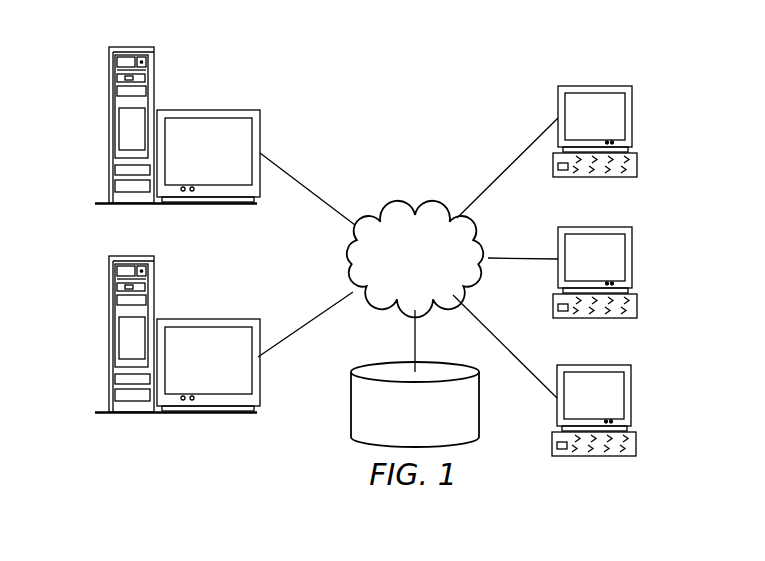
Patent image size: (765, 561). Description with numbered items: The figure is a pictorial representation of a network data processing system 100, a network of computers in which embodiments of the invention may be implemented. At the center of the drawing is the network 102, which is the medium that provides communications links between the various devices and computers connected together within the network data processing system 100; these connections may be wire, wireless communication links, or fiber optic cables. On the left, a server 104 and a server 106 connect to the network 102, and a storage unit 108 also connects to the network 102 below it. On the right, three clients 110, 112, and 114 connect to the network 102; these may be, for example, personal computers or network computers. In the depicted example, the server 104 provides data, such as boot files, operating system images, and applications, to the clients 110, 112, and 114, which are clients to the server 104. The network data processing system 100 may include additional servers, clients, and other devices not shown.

The network data processing system 100 is at (468, 95).
The network 102 is at (387, 212).
The server 104 is at (109, 130).
The server 106 is at (110, 335).
The storage unit 108 is at (351, 412).
The client 110 is at (633, 117).
The client 112 is at (633, 258).
The client 114 is at (631, 398).